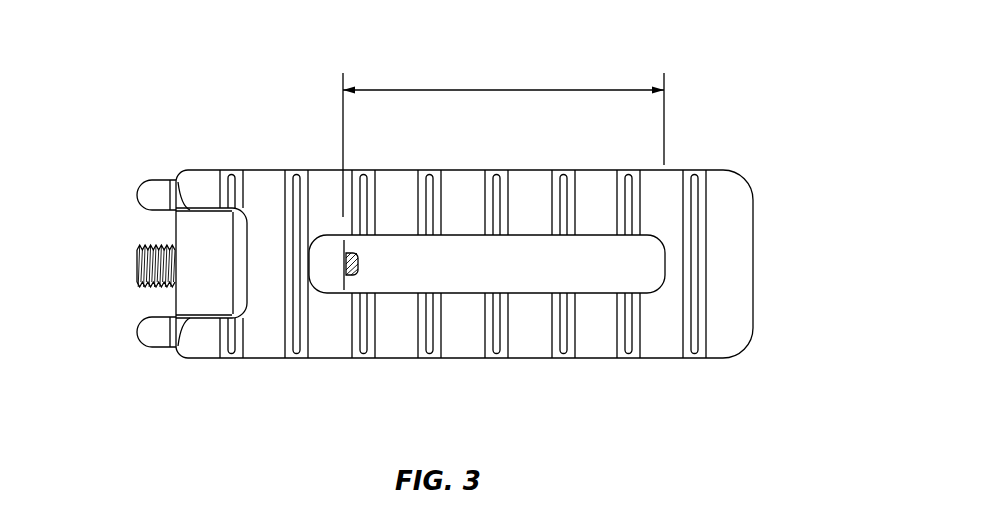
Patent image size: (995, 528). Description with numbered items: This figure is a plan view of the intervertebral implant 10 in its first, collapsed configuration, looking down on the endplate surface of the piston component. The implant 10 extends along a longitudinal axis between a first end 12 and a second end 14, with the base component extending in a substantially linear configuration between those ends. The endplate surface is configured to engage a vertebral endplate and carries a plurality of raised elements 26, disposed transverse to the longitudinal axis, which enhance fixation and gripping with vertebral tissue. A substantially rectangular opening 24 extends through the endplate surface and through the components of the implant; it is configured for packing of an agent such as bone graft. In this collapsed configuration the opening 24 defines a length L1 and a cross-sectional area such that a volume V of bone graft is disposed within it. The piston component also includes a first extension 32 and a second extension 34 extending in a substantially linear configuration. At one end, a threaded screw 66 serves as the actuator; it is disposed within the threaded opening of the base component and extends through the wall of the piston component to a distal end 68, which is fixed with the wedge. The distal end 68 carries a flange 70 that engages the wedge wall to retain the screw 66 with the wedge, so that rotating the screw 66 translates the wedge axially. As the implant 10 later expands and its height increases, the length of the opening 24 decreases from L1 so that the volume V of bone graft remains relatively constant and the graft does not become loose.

The intervertebral implant 10 is at (158, 46).
The first end 12 is at (516, 243).
The second end 14 is at (141, 279).
The opening 24 is at (487, 250).
The raised elements 26 is at (298, 210).
The first extension 32 is at (588, 342).
The second extension 34 is at (595, 207).
The threaded screw 66 is at (135, 262).
The distal end 68 is at (358, 267).
The flange 70 is at (350, 280).
The length L1 is at (503, 140).
The volume V is at (470, 280).